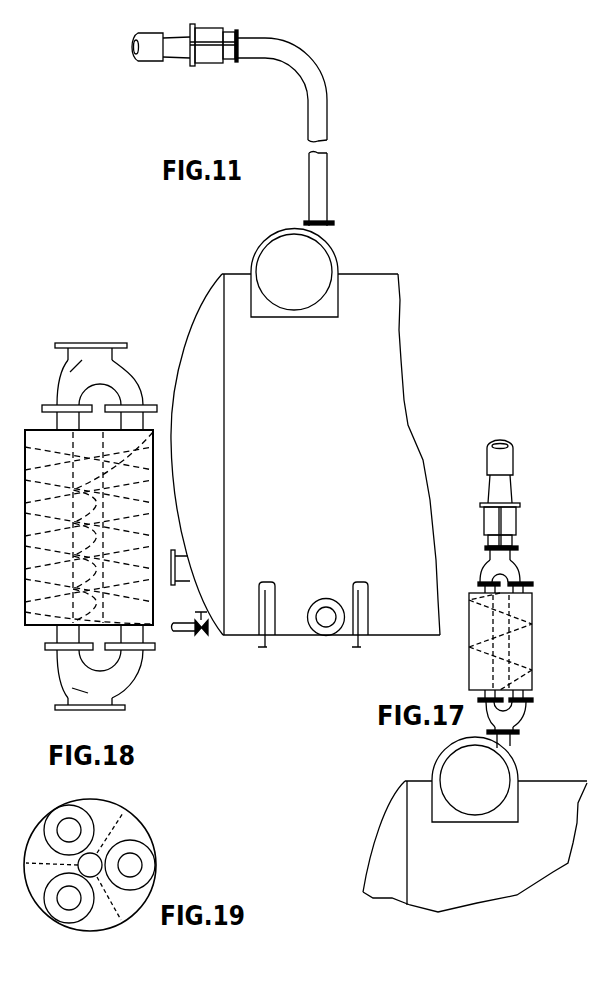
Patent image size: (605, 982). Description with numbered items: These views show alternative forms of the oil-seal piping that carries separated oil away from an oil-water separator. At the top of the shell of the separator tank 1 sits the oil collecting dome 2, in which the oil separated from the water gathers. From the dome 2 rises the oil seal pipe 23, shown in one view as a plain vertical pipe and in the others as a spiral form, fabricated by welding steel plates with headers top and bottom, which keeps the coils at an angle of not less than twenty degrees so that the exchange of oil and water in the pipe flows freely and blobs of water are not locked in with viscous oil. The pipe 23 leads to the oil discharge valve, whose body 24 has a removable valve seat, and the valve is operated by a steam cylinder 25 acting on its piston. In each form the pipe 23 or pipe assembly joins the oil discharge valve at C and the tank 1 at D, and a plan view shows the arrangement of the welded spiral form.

In FIG. 11, the shell of separator tank 1 is at (365, 288).
In FIG. 17, the shell of separator tank 1 is at (550, 792).
In FIG. 11, the oil collecting dome 2 is at (309, 254).
In FIG. 17, the oil collecting dome 2 is at (450, 772).
In FIG. 11, the oil seal pipe 23 is at (320, 178).
In FIG. 11, the body of oil discharge valve 24 is at (207, 58).
In FIG. 17, the body of oil discharge valve 24 is at (488, 520).
In FIG. 11, the steam cylinder 25 is at (152, 60).
In FIG. 17, the steam cylinder 25 is at (496, 458).
In FIG. 18, the joint with oil discharge valve C is at (88, 345).
In FIG. 18, the joint with tank D is at (77, 711).